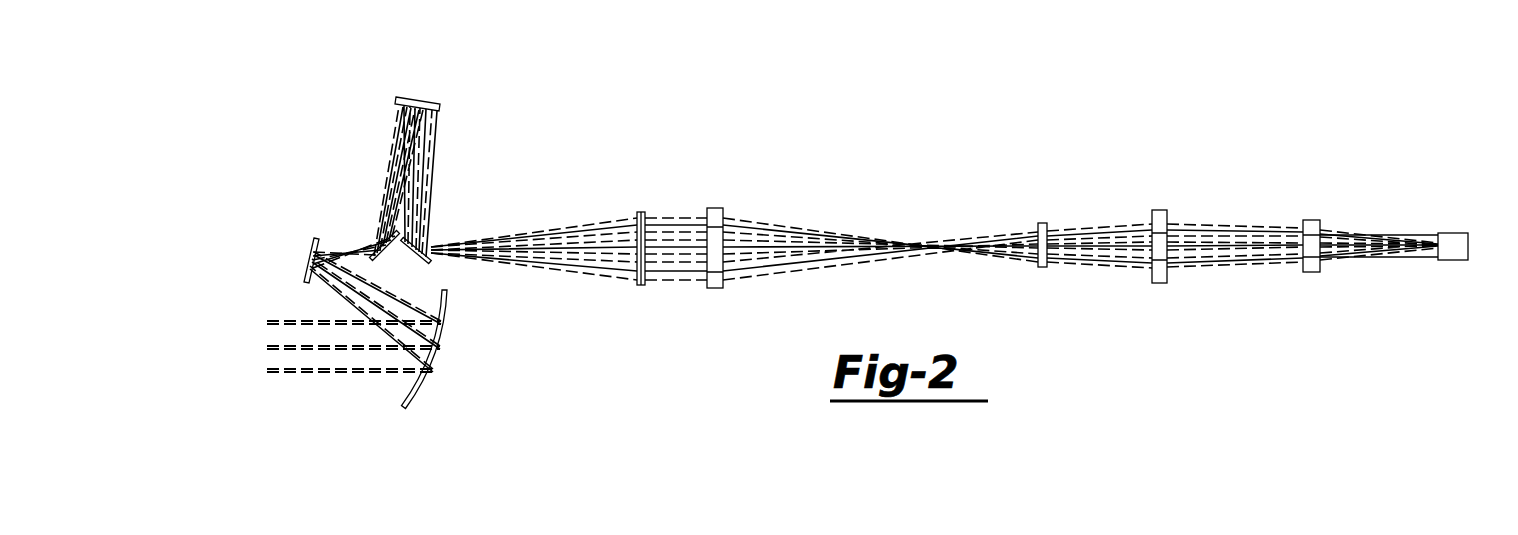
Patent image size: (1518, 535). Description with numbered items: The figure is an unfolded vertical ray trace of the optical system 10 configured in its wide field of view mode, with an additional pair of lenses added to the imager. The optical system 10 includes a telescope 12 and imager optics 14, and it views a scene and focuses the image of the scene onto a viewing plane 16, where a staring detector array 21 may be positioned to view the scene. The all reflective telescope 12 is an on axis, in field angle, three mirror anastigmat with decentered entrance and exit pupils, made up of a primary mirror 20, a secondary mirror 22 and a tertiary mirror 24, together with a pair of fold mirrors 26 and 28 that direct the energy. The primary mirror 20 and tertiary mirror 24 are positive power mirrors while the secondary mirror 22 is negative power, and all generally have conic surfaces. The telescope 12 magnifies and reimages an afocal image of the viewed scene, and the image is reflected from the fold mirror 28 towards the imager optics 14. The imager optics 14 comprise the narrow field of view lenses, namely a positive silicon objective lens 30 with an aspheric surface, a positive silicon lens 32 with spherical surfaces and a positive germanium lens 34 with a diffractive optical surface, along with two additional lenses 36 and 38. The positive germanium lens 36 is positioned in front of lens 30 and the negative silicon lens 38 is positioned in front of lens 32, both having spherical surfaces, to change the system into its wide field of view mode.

The optical system 10 is at (878, 162).
The telescope 12 is at (456, 342).
The imager optics 14 is at (694, 303).
The viewing plane 16 is at (1442, 257).
The primary mirror 20 is at (423, 380).
The staring detector array 21 is at (1458, 238).
The secondary mirror 22 is at (313, 258).
The tertiary mirror 24 is at (427, 102).
The fold mirror 26 is at (377, 263).
The fold mirror 28 is at (415, 260).
The objective lens 30 is at (715, 290).
The lens 32 is at (1158, 283).
The lens 34 is at (1312, 272).
The lens 36 is at (640, 287).
The lens 38 is at (1042, 268).